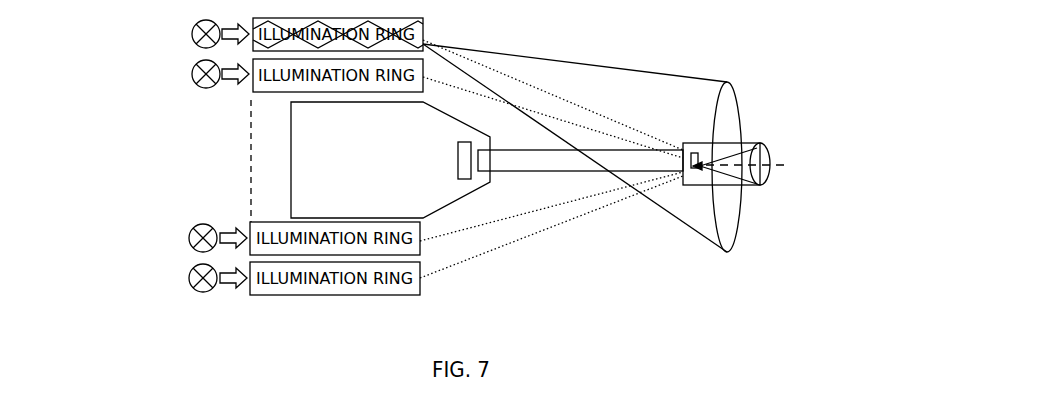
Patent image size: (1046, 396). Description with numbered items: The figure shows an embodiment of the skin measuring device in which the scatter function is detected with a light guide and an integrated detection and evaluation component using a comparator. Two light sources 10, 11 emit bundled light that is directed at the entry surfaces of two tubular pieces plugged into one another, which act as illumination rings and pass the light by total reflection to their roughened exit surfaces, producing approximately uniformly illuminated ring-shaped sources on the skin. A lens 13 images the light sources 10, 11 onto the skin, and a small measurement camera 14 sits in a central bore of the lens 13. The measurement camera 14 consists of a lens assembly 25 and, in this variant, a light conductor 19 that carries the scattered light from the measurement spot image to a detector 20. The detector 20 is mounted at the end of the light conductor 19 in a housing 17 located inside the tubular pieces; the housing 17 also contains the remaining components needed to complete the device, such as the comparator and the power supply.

The light source 10 is at (185, 238).
The light source 11 is at (185, 279).
The lens 13 is at (722, 228).
The measurement camera 14 is at (693, 142).
The housing 17 is at (322, 214).
The light conductor 19 is at (541, 174).
The detector 20 is at (455, 155).
The lens assembly 25 is at (762, 187).